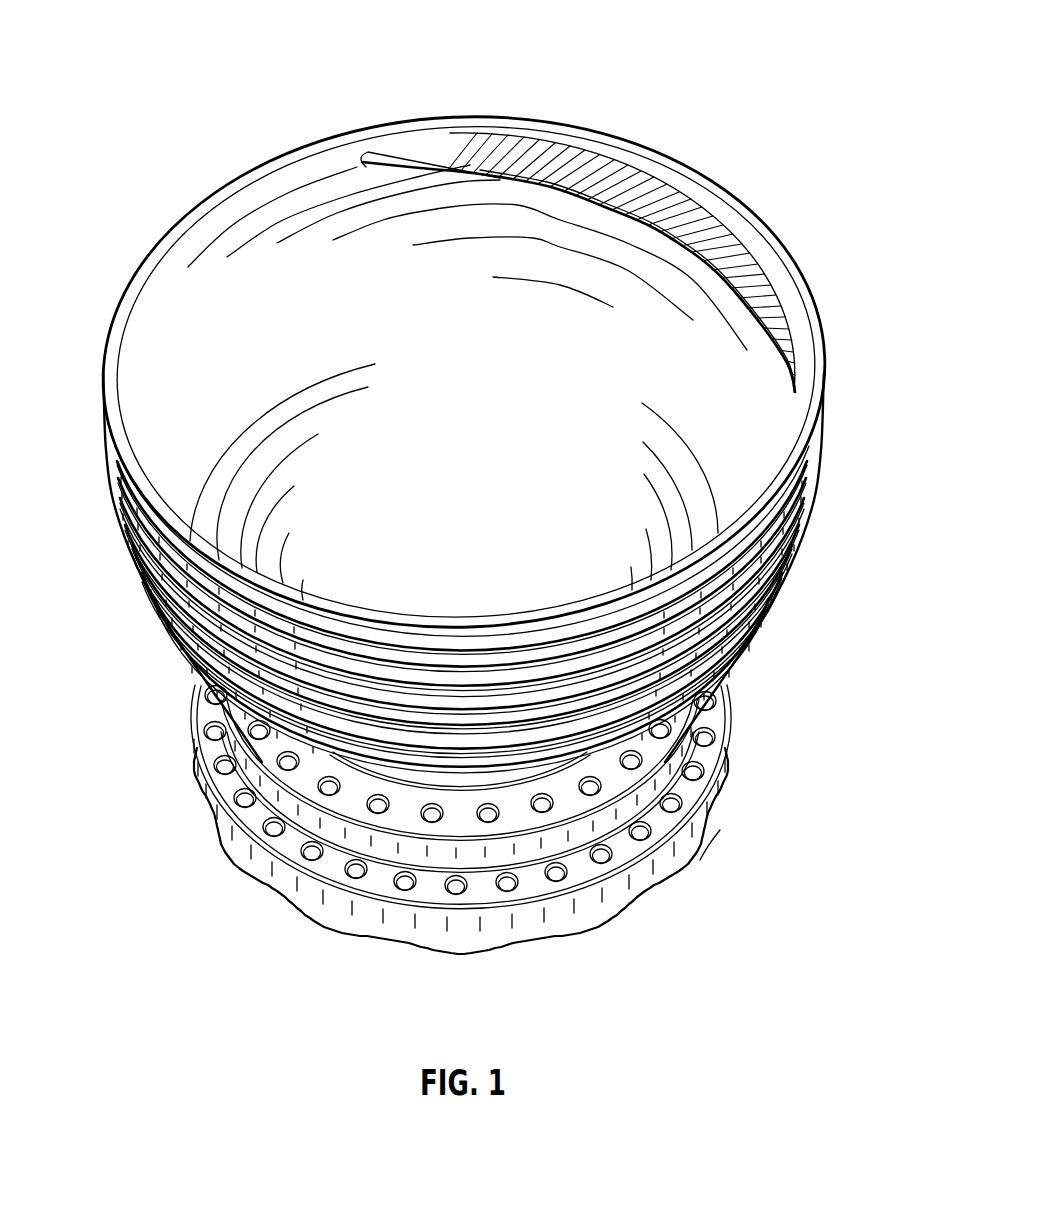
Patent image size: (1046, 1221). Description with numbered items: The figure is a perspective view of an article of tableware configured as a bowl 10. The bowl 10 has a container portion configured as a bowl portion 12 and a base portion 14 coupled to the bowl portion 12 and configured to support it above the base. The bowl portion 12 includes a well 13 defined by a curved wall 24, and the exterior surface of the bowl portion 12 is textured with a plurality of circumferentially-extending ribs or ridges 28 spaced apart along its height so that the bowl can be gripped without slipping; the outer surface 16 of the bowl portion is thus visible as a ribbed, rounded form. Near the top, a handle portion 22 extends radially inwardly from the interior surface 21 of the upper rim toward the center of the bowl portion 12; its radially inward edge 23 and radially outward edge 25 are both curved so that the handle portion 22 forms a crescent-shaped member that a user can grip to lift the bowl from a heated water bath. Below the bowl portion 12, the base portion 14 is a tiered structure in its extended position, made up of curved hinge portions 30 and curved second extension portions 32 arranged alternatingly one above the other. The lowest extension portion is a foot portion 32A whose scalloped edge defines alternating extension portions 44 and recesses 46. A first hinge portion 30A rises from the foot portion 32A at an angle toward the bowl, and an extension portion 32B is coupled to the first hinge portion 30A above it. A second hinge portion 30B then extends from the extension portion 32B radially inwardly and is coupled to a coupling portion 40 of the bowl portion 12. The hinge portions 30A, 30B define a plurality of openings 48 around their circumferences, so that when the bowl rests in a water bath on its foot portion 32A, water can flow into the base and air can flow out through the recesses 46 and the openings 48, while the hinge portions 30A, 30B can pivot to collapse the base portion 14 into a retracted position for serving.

The bowl 10 is at (628, 45).
The bowl portion 12 is at (205, 208).
The well 13 is at (186, 313).
The base portion 14 is at (727, 753).
The outer surface 16 is at (115, 360).
The interior surface 21 is at (263, 188).
The handle portion 22 is at (628, 202).
The radially inward edge 23 is at (540, 188).
The curved wall 24 is at (790, 478).
The radially outward edge 25 is at (712, 210).
The ribs or ridges 28 is at (760, 613).
The hinge portions 30 is at (423, 790).
The first hinge portion 30A is at (275, 840).
The second hinge portion 30B is at (625, 775).
The second extension portions 32 is at (443, 811).
The foot portion 32A is at (293, 895).
The extension portion 32B is at (597, 828).
The coupling portion 40 is at (422, 783).
The extension portions 44 is at (432, 955).
The recesses 46 is at (516, 948).
The openings 48 is at (498, 822).